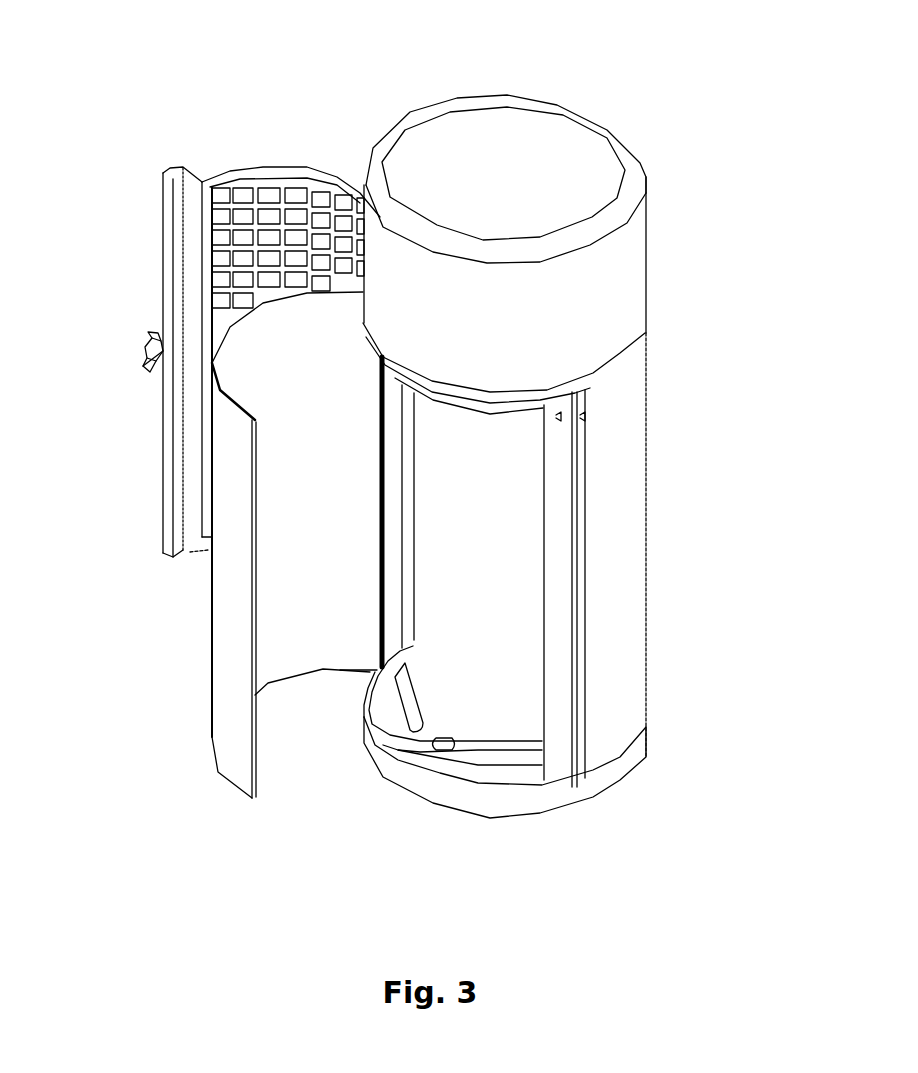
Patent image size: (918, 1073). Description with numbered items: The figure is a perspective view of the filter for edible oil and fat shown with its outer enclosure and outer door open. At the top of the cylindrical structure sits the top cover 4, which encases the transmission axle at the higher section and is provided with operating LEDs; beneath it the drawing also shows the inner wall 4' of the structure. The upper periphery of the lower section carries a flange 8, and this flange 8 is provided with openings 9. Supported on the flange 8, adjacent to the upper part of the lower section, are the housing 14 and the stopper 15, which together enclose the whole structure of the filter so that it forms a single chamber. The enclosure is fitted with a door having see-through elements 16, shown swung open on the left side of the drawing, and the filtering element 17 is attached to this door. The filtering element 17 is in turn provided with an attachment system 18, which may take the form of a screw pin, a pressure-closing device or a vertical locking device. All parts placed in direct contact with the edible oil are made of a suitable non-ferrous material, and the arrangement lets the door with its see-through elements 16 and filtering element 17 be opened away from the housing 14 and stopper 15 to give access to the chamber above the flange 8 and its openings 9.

The top cover 4 is at (551, 212).
The inner wall of container 4' is at (587, 512).
The flange 8 is at (495, 772).
The openings 9 is at (462, 747).
The housing 14 is at (447, 677).
The stopper 15 is at (623, 535).
The see-through elements 16 is at (260, 200).
The filtering element 17 is at (250, 610).
The attachment system 18 is at (153, 337).